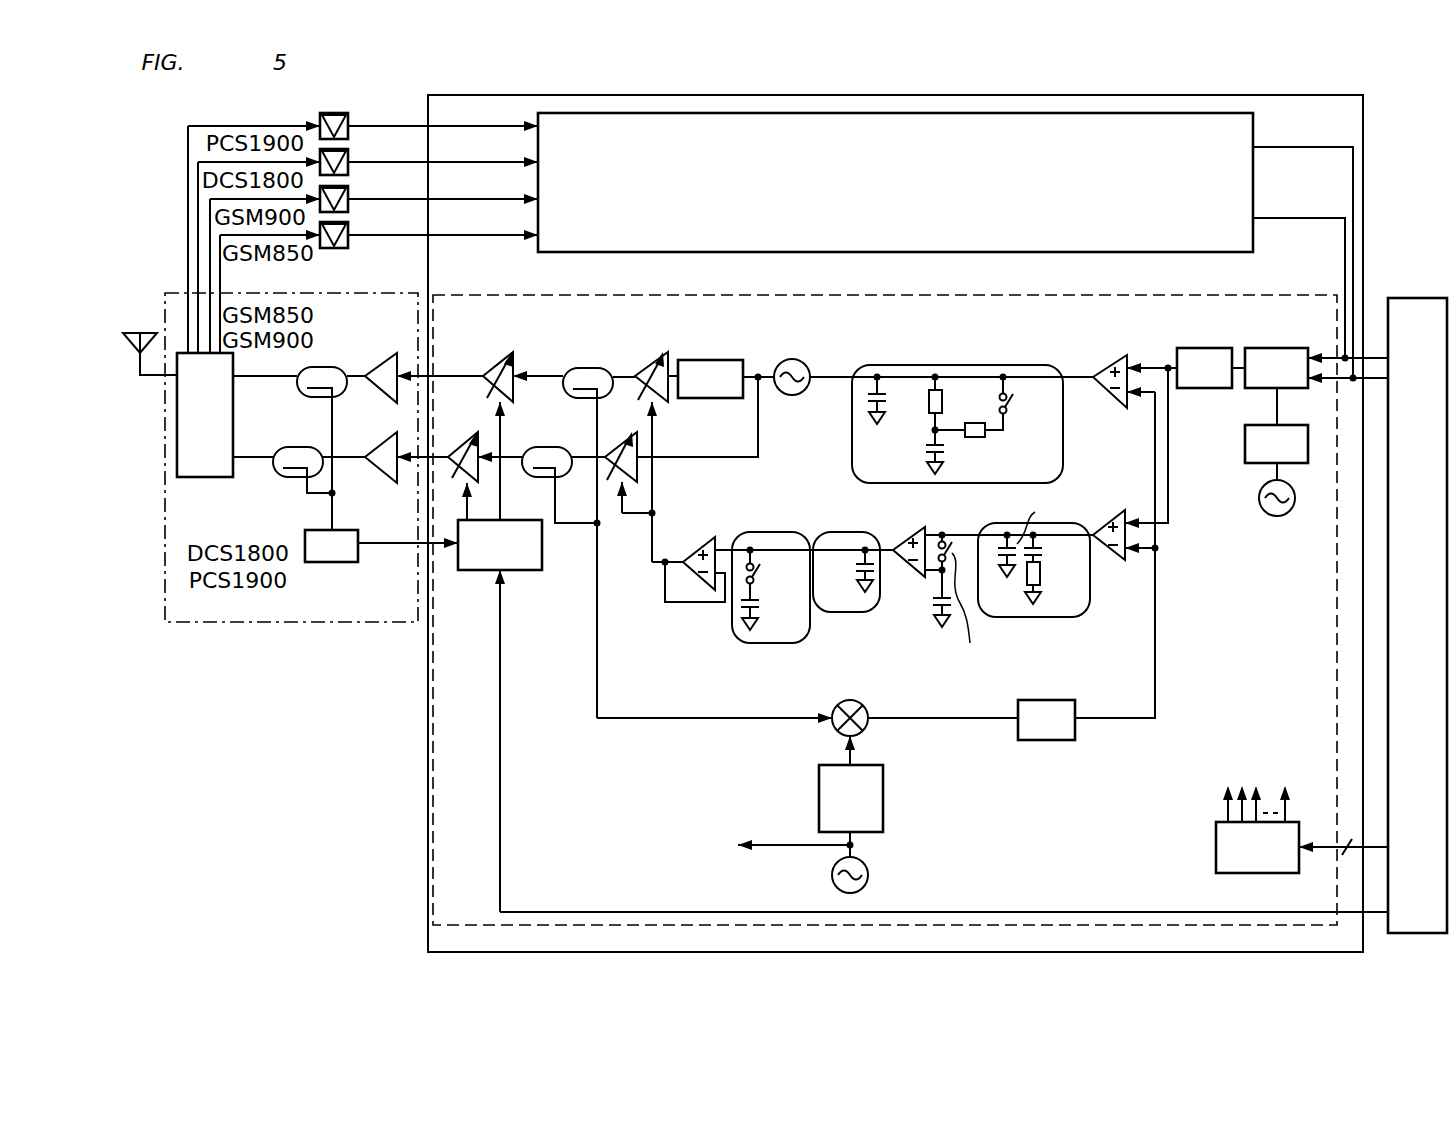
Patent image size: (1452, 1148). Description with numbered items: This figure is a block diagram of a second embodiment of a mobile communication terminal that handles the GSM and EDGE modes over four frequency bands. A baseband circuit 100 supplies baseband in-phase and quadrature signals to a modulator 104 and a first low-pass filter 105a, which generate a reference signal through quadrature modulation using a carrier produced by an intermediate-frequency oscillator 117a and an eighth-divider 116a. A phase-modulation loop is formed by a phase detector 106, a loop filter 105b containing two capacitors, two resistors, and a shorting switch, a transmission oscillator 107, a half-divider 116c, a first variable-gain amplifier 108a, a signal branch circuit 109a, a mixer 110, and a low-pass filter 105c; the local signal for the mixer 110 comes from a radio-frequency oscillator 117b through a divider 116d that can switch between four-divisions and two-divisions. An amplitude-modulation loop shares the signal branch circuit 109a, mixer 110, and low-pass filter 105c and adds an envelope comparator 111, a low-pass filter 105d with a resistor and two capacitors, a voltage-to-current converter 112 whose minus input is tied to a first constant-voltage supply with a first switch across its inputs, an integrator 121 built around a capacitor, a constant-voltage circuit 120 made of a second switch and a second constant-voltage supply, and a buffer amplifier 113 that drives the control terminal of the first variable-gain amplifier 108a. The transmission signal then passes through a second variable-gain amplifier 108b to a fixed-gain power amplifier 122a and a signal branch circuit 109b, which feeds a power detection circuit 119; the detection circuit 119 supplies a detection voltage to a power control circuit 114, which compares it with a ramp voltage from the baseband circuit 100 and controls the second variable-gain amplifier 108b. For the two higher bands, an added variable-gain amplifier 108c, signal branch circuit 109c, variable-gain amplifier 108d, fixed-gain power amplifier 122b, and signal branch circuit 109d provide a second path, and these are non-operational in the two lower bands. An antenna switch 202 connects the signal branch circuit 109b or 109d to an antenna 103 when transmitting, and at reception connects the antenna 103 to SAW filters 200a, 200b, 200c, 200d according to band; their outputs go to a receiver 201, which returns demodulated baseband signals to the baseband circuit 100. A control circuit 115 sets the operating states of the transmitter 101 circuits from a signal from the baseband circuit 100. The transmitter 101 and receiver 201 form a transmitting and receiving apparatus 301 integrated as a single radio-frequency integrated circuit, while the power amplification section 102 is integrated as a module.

The baseband circuit 100 is at (1430, 298).
The transmitter 101 is at (1258, 297).
The power amplification section 102 is at (345, 293).
The antenna 103 is at (130, 330).
The MOD 104 is at (1283, 347).
The LPF 105a is at (1213, 347).
The LPF 105b is at (978, 365).
The LPF 105c is at (1058, 742).
The LPF 105d is at (1055, 618).
The PD 106 is at (1096, 365).
The TXVCO 107 is at (792, 396).
The variable-gain amplifier 108a is at (665, 398).
The VGA 108b is at (487, 362).
The VGA 108c is at (640, 470).
The VGA 108d is at (454, 448).
The signal branch circuit 109a is at (584, 368).
The signal branch circuit 109b is at (300, 400).
The signal branch circuit 109c is at (546, 447).
The signal branch circuit 109d is at (295, 478).
The MIX 110 is at (870, 708).
The envelope comparator 111 is at (1116, 505).
The voltage-to-current converter 112 is at (893, 540).
The buffer amplifier 113 is at (686, 548).
The PA output power control circuit 114 is at (513, 571).
The control circuit 115 is at (1216, 828).
The 1/8-divider 116a is at (1245, 441).
The 1/2-divider 116c is at (718, 358).
The divider 116d is at (819, 787).
The IFVCO 117a is at (1259, 498).
The RFVCO 117b is at (832, 875).
The power detection circuit 119 is at (332, 563).
The constant-voltage circuit 120 is at (760, 644).
The integrator 121 is at (848, 613).
The fixed-gain power amplifier 122a is at (352, 351).
The fixed-gain PA 122b is at (361, 439).
The SAW filter 200a is at (349, 227).
The SAW filter 200b is at (349, 190).
The SAW filter 200c is at (349, 153).
The SAW filter 200d is at (349, 117).
The receiver 201 is at (1255, 135).
The antenna switch 202 is at (200, 478).
The transmitting and receiving apparatus 301 is at (1182, 95).